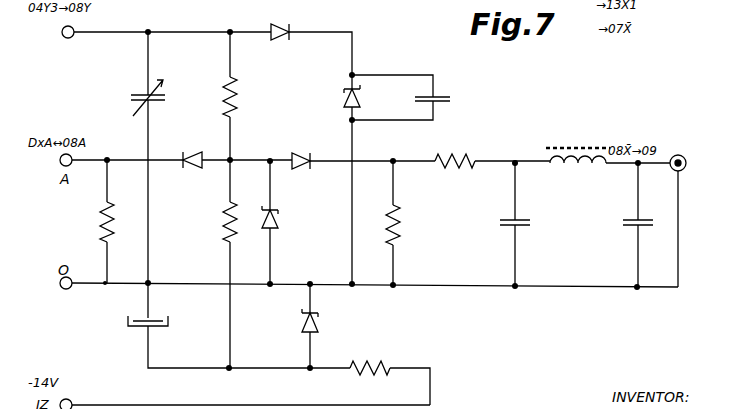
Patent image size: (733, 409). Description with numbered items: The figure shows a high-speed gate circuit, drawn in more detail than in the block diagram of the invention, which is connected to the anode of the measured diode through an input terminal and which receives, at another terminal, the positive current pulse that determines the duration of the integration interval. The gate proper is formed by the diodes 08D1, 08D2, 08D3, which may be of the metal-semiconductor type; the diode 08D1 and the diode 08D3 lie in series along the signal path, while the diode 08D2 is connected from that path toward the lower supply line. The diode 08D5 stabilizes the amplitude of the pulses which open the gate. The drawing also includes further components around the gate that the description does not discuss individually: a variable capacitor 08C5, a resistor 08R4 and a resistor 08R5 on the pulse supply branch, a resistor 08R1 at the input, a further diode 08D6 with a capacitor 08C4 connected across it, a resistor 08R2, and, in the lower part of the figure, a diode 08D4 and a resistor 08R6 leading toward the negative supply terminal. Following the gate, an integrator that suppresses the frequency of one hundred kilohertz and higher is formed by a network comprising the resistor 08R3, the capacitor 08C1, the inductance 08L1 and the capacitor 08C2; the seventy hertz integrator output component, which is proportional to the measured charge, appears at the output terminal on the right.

The variable capacitor 08C5 is at (130, 97).
The resistor 08R4 is at (224, 98).
The diode 08D5 is at (274, 44).
The zener diode 08D6 is at (346, 100).
The capacitor 08C4 is at (440, 104).
The diode 08D1 is at (200, 155).
The diode 08D3 is at (322, 142).
The resistor 08R3 is at (477, 148).
The inductance 08L1 is at (588, 168).
The resistor 08R1 is at (100, 230).
The resistor 08R5 is at (222, 226).
The diode 08D2 is at (278, 222).
The resistor 08R2 is at (400, 226).
The capacitor 08C1 is at (500, 225).
The capacitor 08C2 is at (622, 228).
The zener diode 08D4 is at (314, 334).
The resistor 08R6 is at (388, 378).